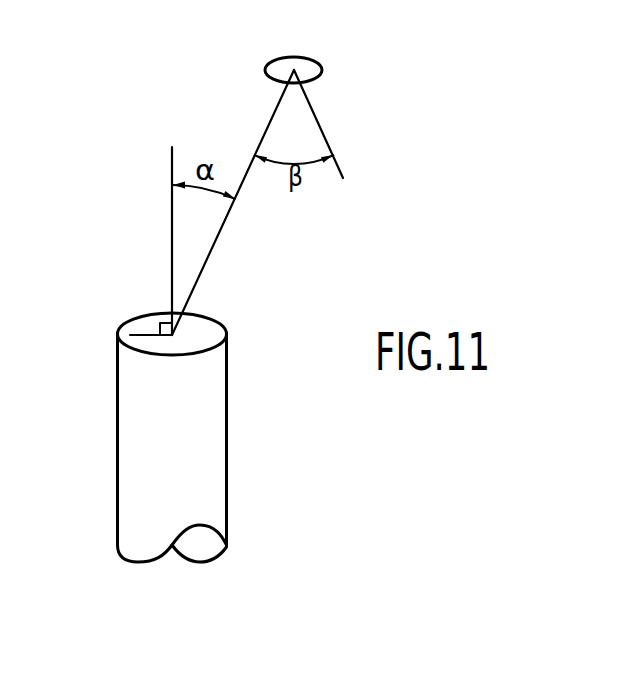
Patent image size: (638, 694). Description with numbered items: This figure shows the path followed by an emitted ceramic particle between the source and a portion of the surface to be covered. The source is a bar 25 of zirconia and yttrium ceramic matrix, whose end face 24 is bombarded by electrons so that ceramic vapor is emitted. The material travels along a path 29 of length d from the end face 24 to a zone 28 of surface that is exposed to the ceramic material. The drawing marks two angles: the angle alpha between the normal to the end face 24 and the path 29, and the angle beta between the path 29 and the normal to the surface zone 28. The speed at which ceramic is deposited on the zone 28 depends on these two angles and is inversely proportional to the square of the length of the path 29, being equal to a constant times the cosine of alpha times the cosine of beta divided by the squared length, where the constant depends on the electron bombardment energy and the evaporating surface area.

The end face 24 is at (205, 330).
The bar 25 is at (215, 455).
The zone of surface 28 is at (281, 61).
The path 29 is at (242, 183).